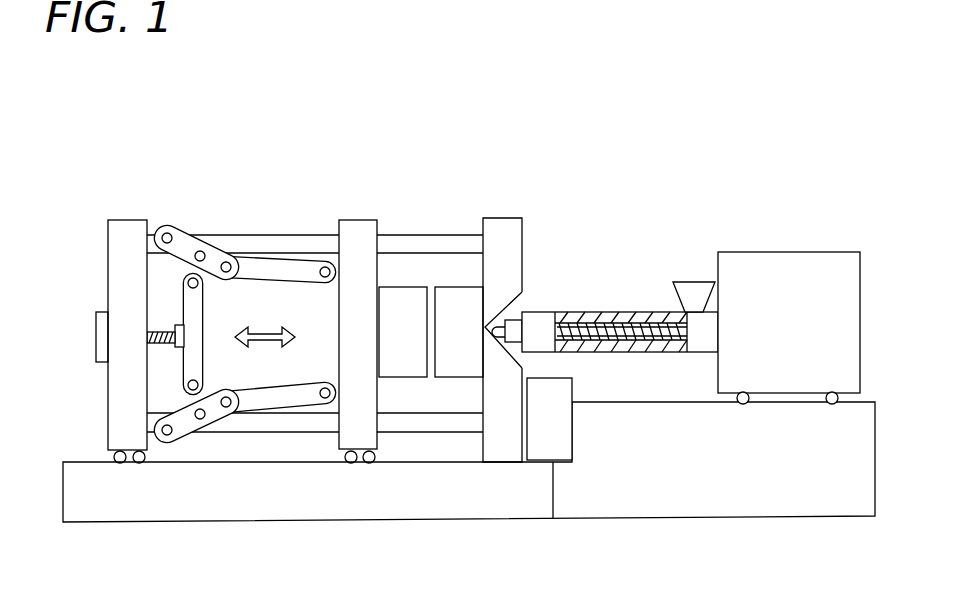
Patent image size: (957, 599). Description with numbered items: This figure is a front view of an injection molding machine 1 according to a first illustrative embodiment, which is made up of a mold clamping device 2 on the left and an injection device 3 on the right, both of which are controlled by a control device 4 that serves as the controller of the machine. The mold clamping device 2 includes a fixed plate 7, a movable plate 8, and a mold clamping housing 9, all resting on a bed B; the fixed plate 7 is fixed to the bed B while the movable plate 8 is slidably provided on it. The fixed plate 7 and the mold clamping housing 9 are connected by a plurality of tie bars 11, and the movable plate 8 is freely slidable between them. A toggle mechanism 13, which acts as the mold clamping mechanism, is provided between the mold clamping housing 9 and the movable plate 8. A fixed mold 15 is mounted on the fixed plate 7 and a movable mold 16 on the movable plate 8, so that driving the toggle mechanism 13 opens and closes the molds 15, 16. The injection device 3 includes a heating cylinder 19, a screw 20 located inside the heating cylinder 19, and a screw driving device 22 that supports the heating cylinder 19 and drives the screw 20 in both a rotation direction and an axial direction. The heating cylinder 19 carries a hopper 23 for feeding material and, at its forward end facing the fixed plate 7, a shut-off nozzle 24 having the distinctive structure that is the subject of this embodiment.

The injection molding machine 1 is at (820, 118).
The mold clamping device 2 is at (506, 148).
The injection device 3 is at (823, 186).
The control device 4 is at (557, 458).
The fixed plate 7 is at (513, 218).
The movable plate 8 is at (360, 220).
The mold clamping housing 9 is at (132, 220).
The tie bars 11 is at (267, 233).
The toggle mechanism 13 is at (246, 228).
The fixed mold 15 is at (452, 287).
The movable mold 16 is at (400, 287).
The heating cylinder 19 is at (571, 312).
The screw 20 is at (613, 312).
The screw driving device 22 is at (755, 252).
The hopper 23 is at (684, 281).
The shut-off nozzle 24 is at (514, 318).
The bed B is at (259, 507).